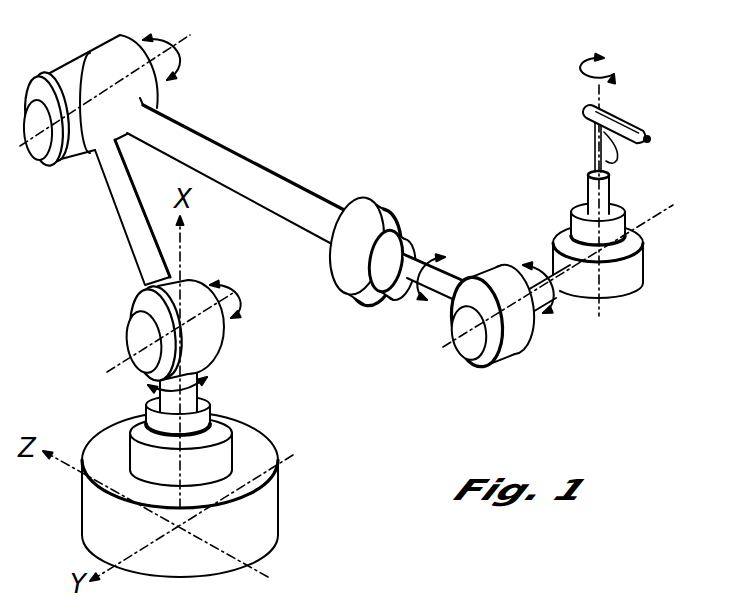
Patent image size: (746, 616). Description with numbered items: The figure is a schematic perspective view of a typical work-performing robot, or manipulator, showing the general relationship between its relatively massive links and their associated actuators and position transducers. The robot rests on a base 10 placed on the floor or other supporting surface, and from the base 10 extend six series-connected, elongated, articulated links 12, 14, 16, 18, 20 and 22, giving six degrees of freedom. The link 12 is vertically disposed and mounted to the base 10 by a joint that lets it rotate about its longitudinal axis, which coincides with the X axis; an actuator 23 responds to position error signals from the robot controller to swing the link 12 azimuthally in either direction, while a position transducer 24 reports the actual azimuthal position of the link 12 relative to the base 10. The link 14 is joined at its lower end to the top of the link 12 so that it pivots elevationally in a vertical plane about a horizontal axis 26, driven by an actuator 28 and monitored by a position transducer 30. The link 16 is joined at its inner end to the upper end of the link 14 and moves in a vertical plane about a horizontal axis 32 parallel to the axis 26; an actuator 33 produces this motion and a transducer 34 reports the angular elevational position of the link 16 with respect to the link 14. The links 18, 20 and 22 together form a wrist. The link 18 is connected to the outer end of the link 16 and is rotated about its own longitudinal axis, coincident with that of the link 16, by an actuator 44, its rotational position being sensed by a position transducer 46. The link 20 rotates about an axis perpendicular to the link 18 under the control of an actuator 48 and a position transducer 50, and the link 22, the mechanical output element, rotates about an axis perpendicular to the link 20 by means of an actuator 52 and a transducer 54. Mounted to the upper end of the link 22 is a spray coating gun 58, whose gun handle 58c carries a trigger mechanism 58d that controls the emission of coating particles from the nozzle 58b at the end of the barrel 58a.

The base 10 is at (265, 528).
The link 12 is at (195, 384).
The link 14 is at (133, 227).
The link 16 is at (272, 181).
The link 18 is at (447, 278).
The link 20 is at (562, 293).
The link 22 is at (613, 194).
The actuator 23 is at (228, 452).
The position transducer 24 is at (215, 417).
The horizontal axis 26 is at (117, 362).
The actuator 28 is at (216, 338).
The position transducer 30 is at (127, 312).
The horizontal axis 32 is at (186, 59).
The actuator 33 is at (88, 48).
The transducer 34 is at (46, 152).
The actuator 44 is at (376, 198).
The position transducer 46 is at (413, 246).
The actuator 48 is at (534, 342).
The position transducer 50 is at (478, 355).
The actuator 52 is at (632, 277).
The transducer 54 is at (623, 237).
The spray coating gun 58 is at (629, 84).
The barrel 58a is at (627, 117).
The nozzle 58b is at (651, 142).
The gun handle 58c is at (594, 124).
The trigger mechanism 58d is at (601, 160).